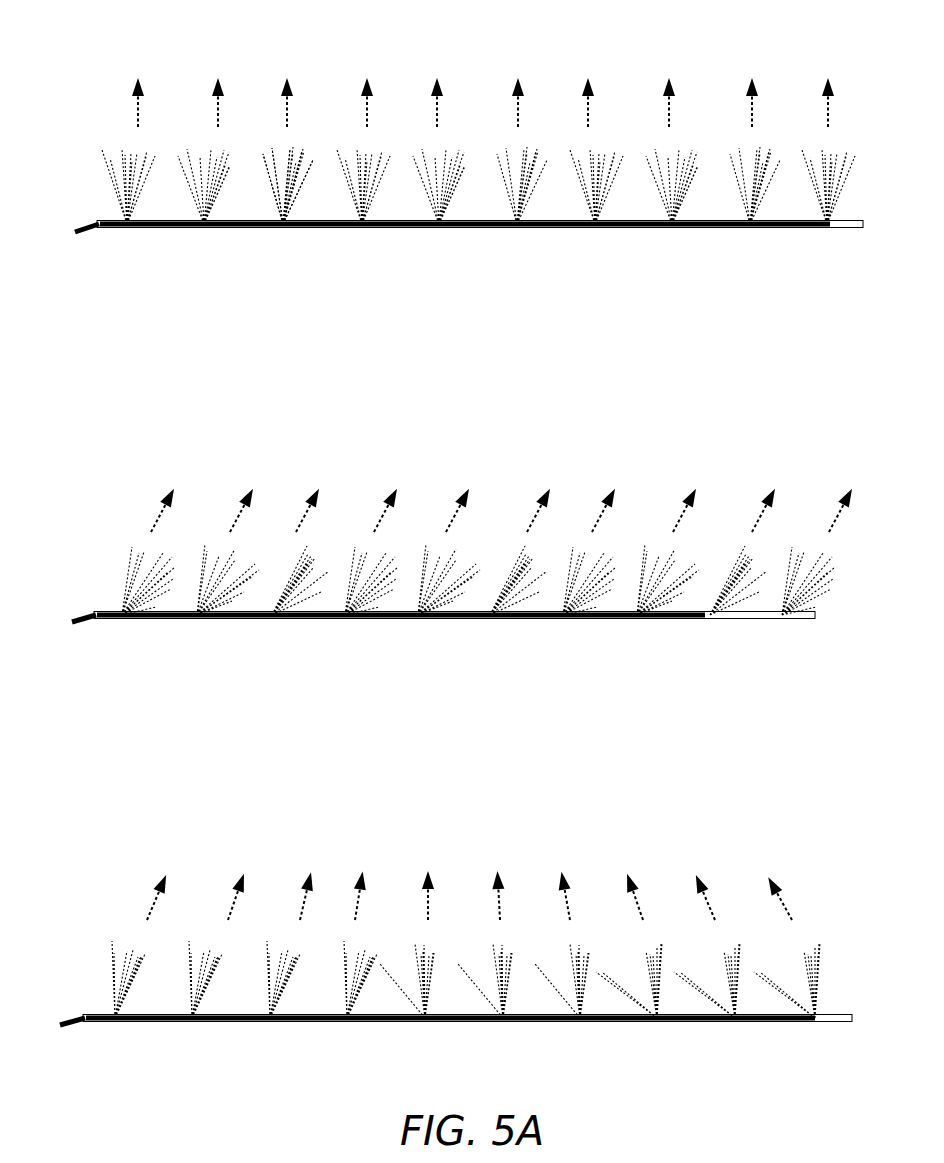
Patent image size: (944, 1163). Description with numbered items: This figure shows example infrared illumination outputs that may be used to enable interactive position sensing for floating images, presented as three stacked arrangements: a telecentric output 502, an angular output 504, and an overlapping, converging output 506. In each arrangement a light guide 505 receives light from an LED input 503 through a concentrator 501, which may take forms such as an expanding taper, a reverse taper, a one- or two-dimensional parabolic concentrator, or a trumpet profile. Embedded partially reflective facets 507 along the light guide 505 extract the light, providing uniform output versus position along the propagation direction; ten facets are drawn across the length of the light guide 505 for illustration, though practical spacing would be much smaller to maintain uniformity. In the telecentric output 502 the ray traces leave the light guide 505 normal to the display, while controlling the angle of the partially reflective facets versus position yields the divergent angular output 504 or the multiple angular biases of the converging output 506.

The concentrator 501 is at (96, 213).
The telecentric output 502 is at (166, 52).
The LED input 503 is at (80, 246).
The angular output 504 is at (183, 439).
The light guide 505 is at (289, 240).
The overlapping (converging) output 506 is at (201, 827).
The embedded partially reflective facets 507 is at (664, 238).